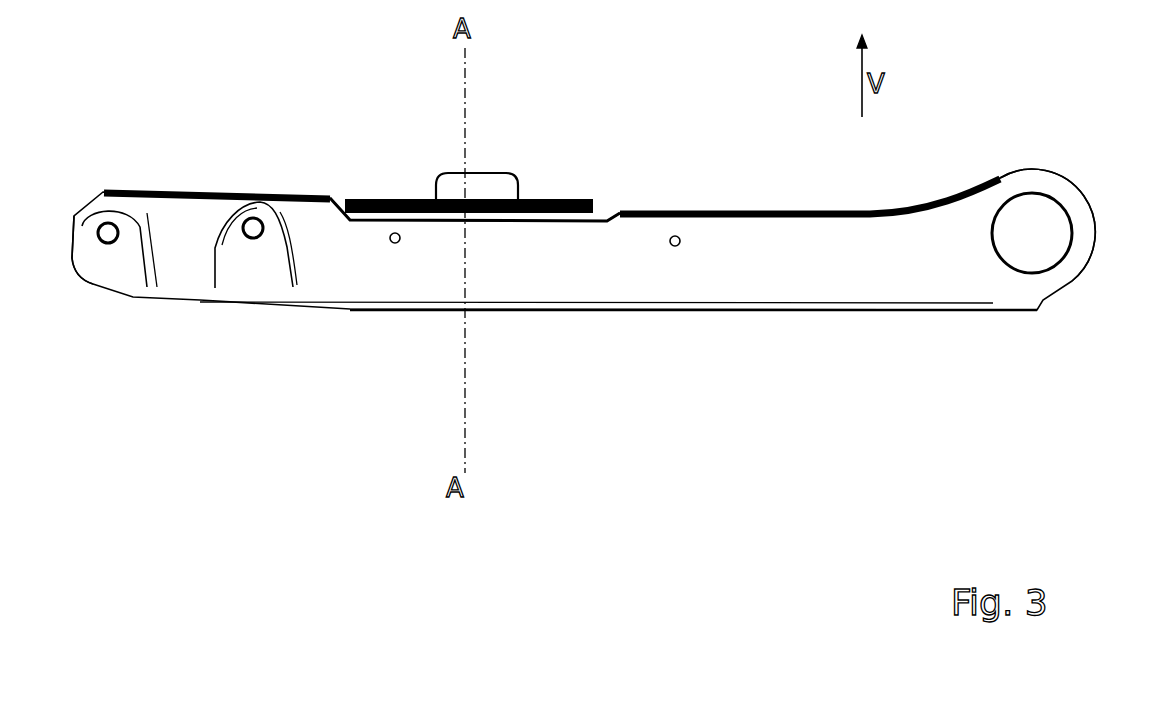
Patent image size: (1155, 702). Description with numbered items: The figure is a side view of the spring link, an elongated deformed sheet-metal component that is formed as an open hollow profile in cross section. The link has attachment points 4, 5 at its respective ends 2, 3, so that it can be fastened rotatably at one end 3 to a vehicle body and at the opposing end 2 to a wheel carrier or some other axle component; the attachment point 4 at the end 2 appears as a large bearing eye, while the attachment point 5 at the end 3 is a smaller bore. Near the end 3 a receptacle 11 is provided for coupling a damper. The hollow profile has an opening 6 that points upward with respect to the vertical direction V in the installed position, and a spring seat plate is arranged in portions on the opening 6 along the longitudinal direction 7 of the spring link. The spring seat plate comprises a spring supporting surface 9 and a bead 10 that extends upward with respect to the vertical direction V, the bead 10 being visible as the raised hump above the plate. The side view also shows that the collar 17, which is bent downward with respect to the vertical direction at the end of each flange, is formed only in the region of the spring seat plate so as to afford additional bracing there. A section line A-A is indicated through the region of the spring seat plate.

The end 2 is at (1134, 244).
The end 3 is at (57, 253).
The attachment point 4 is at (1050, 237).
The attachment point 5 is at (108, 240).
The opening 6 is at (593, 210).
The longitudinal direction 7 is at (913, 388).
The spring supporting surface 9 is at (555, 208).
The bead 10 is at (490, 193).
The receptacle 11 is at (256, 224).
The collar 17 is at (595, 222).